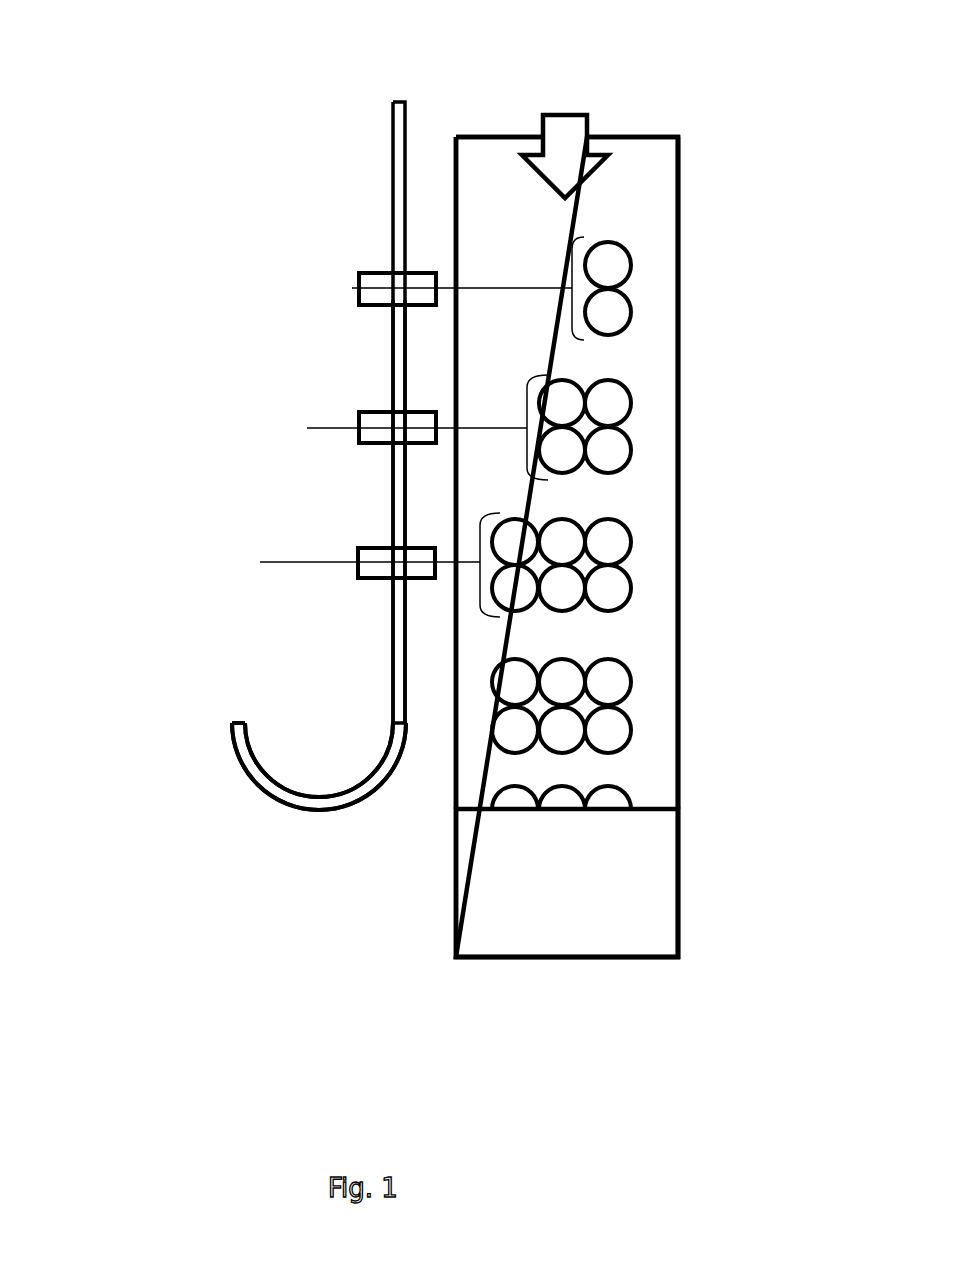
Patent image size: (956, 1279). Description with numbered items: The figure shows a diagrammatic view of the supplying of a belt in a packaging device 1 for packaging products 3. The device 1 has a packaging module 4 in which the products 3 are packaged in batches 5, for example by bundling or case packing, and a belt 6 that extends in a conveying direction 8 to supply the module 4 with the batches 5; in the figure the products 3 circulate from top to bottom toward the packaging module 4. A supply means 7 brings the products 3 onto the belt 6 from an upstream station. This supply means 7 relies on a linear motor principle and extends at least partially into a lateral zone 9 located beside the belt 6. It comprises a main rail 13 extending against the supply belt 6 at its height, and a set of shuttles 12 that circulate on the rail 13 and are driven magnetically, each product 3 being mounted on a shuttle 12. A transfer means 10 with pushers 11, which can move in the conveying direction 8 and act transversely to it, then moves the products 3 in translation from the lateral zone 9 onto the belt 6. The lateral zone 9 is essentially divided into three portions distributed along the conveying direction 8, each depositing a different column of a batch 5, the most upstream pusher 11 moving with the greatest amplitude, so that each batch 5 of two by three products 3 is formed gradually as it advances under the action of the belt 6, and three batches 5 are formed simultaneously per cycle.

The packaging device 1 is at (732, 518).
The products 3 is at (614, 257).
The packaging module 4 is at (647, 894).
The batches 5 is at (652, 694).
The belt 6 is at (652, 151).
The supply means 7 is at (218, 243).
The conveying direction 8 is at (564, 133).
The lateral zone 9 is at (386, 961).
The transfer means 10 is at (256, 502).
The pusher 11 is at (503, 262).
The shuttles 12 is at (350, 259).
The main rail 13 is at (264, 816).